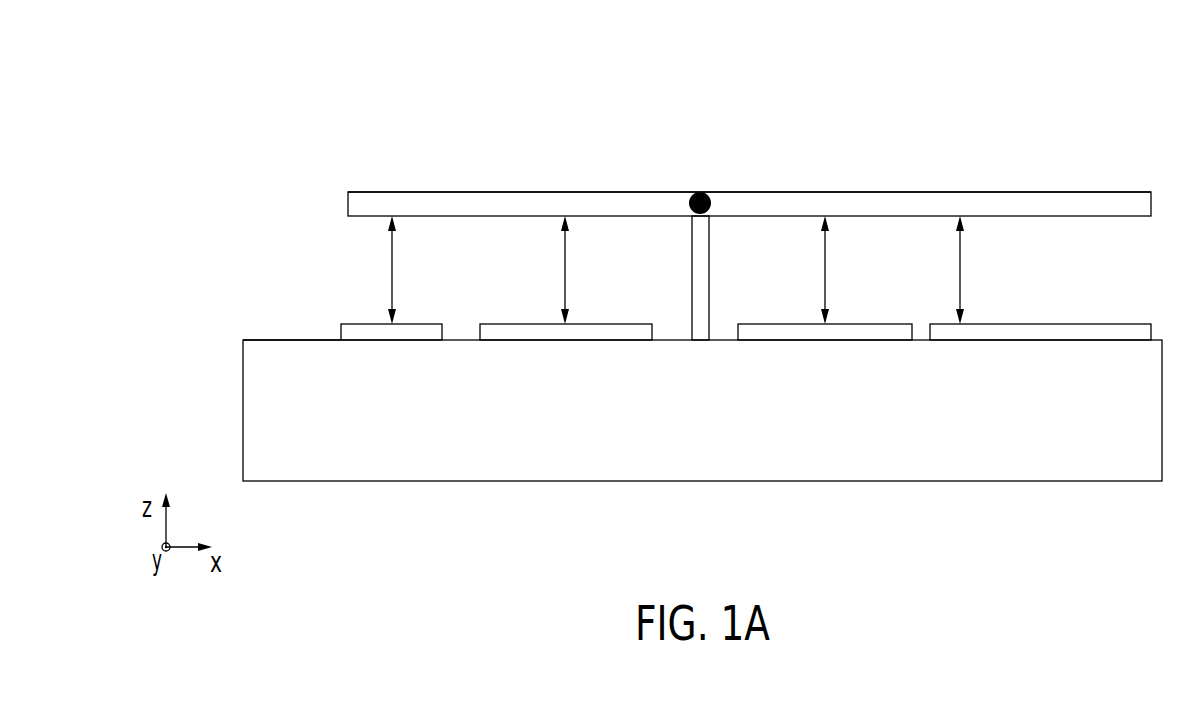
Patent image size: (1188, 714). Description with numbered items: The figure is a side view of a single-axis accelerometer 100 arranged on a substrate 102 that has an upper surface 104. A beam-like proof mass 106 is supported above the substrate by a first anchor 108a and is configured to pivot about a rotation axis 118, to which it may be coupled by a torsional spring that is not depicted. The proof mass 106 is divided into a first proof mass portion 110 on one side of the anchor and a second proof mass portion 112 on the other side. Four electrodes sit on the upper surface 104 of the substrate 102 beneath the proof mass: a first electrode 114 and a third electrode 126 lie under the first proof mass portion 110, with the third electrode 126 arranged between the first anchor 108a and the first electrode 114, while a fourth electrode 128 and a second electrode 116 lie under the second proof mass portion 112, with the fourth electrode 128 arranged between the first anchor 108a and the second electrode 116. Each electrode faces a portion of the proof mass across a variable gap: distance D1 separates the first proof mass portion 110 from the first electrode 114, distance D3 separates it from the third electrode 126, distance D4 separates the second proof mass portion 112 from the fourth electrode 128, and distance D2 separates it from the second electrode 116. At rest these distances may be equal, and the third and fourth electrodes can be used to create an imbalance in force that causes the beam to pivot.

The single-axis accelerometer 100 is at (972, 102).
The substrate 102 is at (575, 465).
The upper surface 104 is at (262, 337).
The proof mass 106 is at (357, 200).
The first proof mass portion 110 is at (463, 200).
The second proof mass portion 112 is at (1073, 202).
The rotation axis 118 is at (701, 192).
The first anchor 108a is at (700, 260).
The first electrode 114 is at (358, 330).
The third electrode 126 is at (523, 330).
The fourth electrode 128 is at (775, 330).
The second electrode 116 is at (1130, 330).
The distance D1 is at (404, 270).
The distance D2 is at (974, 270).
The distance D3 is at (579, 270).
The distance D4 is at (838, 270).